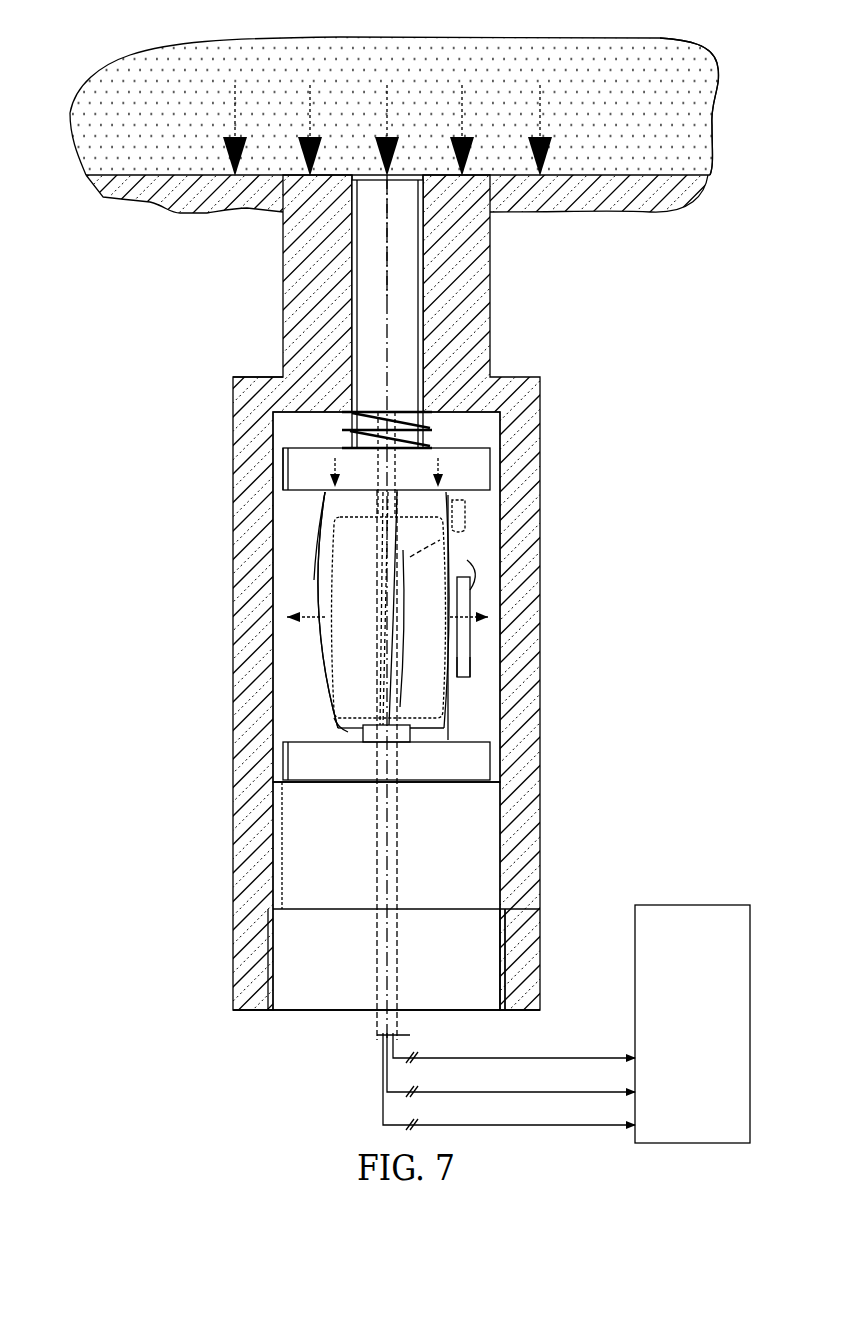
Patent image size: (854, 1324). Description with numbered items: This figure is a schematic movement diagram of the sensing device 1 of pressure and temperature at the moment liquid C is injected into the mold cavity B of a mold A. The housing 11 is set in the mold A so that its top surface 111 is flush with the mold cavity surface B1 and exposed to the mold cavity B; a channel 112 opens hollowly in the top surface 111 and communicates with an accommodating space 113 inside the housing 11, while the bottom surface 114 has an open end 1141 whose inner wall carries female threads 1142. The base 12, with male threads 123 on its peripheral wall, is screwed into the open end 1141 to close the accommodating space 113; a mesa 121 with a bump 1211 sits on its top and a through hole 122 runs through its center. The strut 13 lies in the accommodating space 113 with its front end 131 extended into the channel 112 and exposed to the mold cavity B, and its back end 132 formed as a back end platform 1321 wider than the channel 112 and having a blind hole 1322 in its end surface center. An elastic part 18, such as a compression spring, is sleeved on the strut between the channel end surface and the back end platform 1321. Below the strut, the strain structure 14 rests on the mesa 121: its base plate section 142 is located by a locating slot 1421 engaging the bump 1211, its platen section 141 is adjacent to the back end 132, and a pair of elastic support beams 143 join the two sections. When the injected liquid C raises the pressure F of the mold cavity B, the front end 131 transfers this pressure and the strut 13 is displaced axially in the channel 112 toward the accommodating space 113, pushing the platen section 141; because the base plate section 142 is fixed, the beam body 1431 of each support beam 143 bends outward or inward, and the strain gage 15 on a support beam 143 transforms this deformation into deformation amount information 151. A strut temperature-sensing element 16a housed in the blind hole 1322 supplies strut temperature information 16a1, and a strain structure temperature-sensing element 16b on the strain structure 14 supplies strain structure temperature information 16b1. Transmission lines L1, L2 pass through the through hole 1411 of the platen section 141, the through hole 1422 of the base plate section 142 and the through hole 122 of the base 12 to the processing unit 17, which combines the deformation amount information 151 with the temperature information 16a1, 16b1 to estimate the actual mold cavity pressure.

The sensing device 1 is at (130, 292).
The housing 11 is at (232, 406).
The top surface 111 is at (430, 177).
The channel 112 is at (350, 178).
The accommodating space 113 is at (307, 535).
The bottom surface 114 is at (250, 1012).
The open end 1141 is at (325, 1020).
The female threads 1142 is at (503, 960).
The base 12 is at (295, 857).
The mesa 121 is at (283, 740).
The bump 1211 is at (370, 782).
The through hole 122 is at (377, 890).
The male threads 123 is at (510, 940).
The strut 13 is at (385, 290).
The front end 131 is at (398, 178).
The back end 132 is at (300, 503).
The back end platform 1321 is at (290, 468).
The blind hole 1322 is at (340, 448).
The strain structure 14 is at (318, 590).
The platen section 141 is at (345, 494).
The through hole 1411 is at (384, 516).
The base plate section 142 is at (318, 726).
The locating slot 1421 is at (405, 742).
The through hole 1422 is at (385, 724).
The support beams 143 is at (316, 680).
The beam body 1431 is at (328, 608).
The strain gage 15 is at (468, 553).
The deformation amount information 151 is at (440, 1060).
The strut temperature-sensing element 16a is at (398, 470).
The strut temperature information 16a1 is at (440, 1093).
The strain structure temperature-sensing element 16b is at (458, 500).
The strain structure temperature information 16b1 is at (440, 1126).
The processing unit 17 is at (729, 946).
The elastic part 18 is at (410, 412).
The mold A is at (117, 192).
The mold cavity B is at (277, 57).
The mold cavity surface B1 is at (207, 175).
The liquid C is at (683, 80).
The pressure F is at (387, 122).
The transmission line L1 is at (462, 665).
The transmission line L2 is at (405, 570).